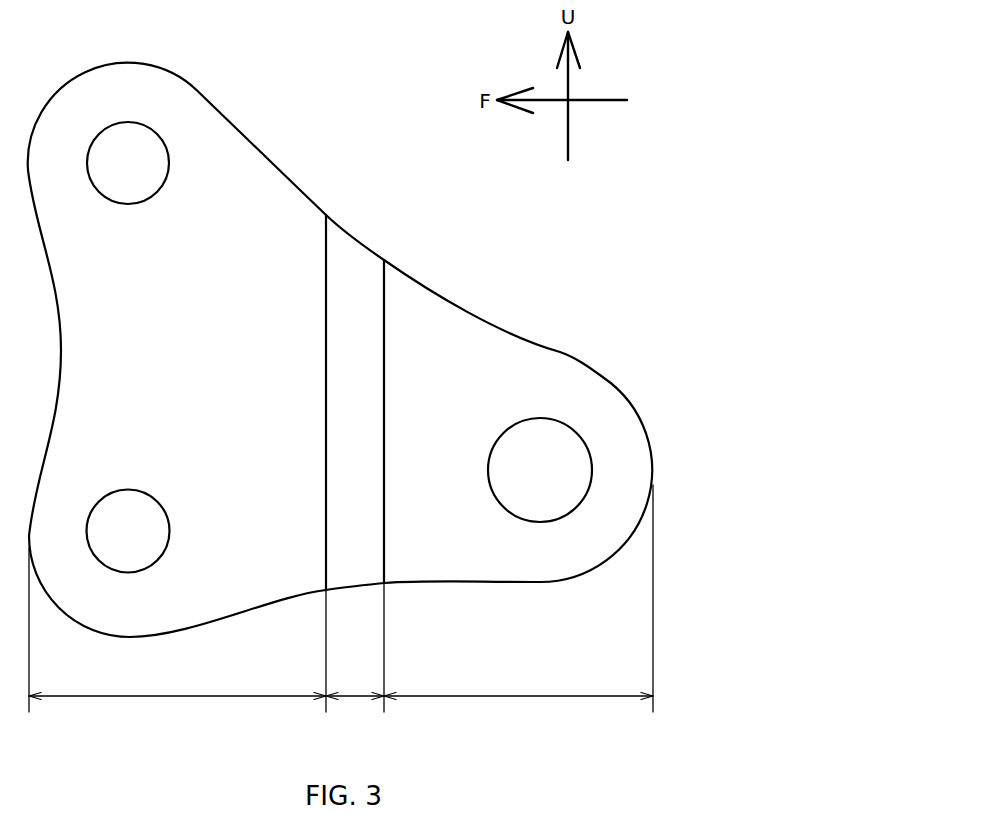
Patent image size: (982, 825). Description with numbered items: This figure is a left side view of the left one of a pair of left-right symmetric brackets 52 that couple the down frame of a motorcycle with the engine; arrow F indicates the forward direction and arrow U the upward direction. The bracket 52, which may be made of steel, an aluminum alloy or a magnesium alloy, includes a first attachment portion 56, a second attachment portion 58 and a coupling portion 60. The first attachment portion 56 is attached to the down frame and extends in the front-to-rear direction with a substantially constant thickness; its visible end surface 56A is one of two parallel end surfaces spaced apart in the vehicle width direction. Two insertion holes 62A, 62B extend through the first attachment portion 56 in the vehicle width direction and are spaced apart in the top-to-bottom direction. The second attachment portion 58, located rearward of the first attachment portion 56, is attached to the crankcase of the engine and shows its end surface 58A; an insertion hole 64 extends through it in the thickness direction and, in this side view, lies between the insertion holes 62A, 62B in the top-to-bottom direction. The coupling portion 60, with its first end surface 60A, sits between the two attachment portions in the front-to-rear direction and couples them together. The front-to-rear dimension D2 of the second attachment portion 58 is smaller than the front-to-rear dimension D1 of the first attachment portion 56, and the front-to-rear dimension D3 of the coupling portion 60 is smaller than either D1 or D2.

The bracket 52 is at (289, 167).
The first attachment portion 56 is at (177, 376).
The end surface 56A is at (220, 385).
The second attachment portion 58 is at (518, 461).
The end surface 58A is at (431, 398).
The coupling portion 60 is at (355, 441).
The end surface 60A is at (338, 410).
The insertion hole 62A is at (127, 122).
The insertion hole 62B is at (109, 568).
The insertion hole 64 is at (544, 421).
The front-to-rear dimension of the first attachment portion D1 is at (177, 635).
The front-to-rear dimension of the second attachment portion D2 is at (518, 604).
The front-to-rear dimension of the coupling portion D3 is at (355, 653).